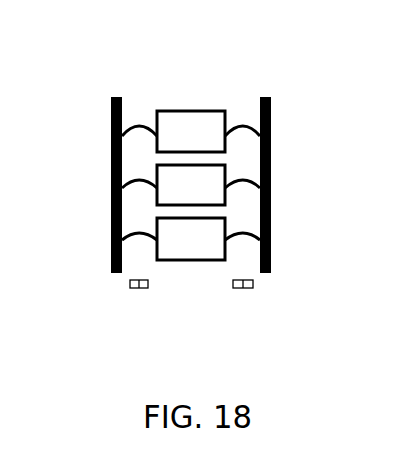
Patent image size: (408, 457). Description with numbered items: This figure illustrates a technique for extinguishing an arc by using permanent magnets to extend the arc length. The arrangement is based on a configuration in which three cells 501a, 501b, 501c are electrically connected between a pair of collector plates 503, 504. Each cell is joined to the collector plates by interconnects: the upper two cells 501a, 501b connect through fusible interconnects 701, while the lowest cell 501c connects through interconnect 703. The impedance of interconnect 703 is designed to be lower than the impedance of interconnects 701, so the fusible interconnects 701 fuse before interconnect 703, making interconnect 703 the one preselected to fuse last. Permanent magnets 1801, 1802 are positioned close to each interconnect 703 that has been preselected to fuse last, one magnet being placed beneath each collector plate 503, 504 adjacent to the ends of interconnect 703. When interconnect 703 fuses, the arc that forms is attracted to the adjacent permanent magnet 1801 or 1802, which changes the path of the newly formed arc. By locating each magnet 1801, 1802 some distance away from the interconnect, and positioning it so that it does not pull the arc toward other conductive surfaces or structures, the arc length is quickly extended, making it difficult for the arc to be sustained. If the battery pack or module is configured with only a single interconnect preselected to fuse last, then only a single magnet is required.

The cell 501a is at (204, 112).
The cell 501b is at (226, 180).
The cell 501c is at (166, 252).
The collector plate 503 is at (111, 130).
The collector plate 504 is at (272, 131).
The fusible interconnect 701 is at (136, 126).
The fusible interconnect 703 is at (137, 232).
The permanent magnet 1801 is at (137, 291).
The permanent magnet 1802 is at (243, 289).